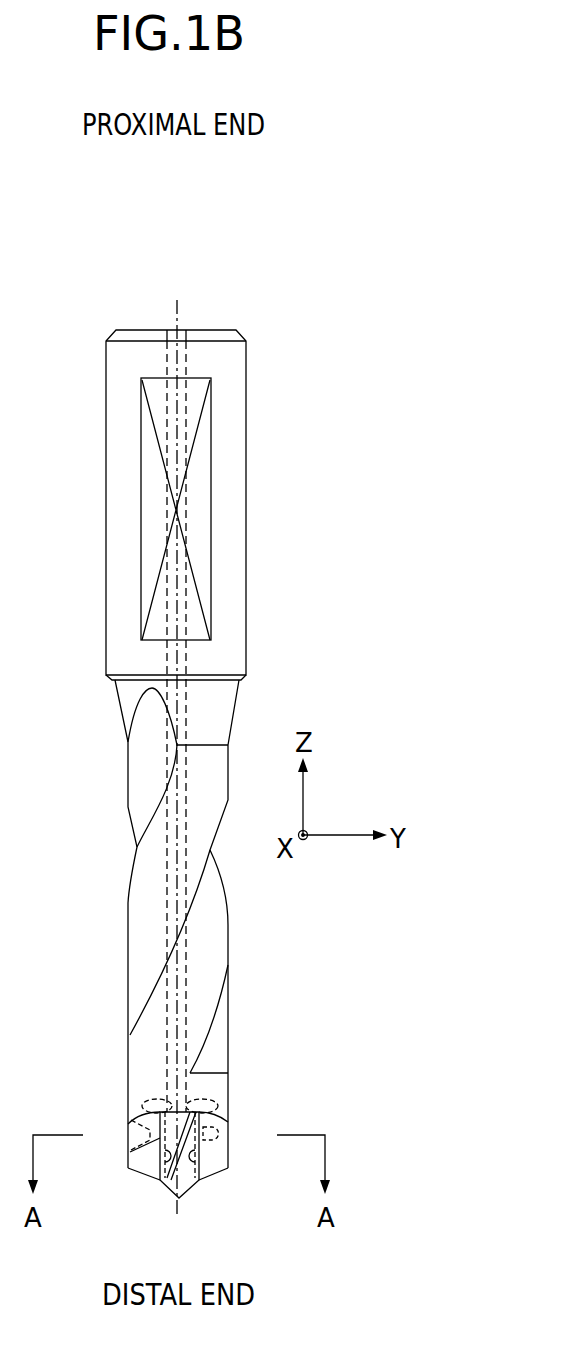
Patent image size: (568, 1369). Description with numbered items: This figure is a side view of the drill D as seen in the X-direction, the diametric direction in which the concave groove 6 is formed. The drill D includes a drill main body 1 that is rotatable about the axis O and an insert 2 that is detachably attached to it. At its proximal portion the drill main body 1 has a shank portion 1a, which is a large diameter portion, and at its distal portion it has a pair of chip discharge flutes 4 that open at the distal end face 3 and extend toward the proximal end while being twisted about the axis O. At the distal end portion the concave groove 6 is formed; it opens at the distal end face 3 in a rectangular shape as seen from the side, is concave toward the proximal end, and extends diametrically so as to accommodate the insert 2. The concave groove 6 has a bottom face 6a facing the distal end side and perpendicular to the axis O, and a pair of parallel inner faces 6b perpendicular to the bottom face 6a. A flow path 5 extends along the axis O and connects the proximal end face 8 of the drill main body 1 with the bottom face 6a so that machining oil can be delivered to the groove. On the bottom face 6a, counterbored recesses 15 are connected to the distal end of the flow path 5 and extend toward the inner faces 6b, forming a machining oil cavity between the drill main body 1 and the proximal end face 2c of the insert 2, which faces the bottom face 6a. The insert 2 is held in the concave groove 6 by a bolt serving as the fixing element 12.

The drill D is at (207, 258).
The drill main body 1 is at (118, 800).
The shank portion 1a is at (122, 475).
The insert 2 is at (186, 1188).
The proximal end face (back face) of the insert 2c is at (226, 1073).
The distal end face 3 is at (138, 1175).
The chip discharge flutes 4 is at (152, 1012).
The flow path 5 is at (168, 707).
The concave groove 6 is at (200, 1176).
The bottom face 6a is at (142, 1113).
The inner faces 6b is at (163, 1168).
The proximal end face 8 is at (203, 330).
The fixing element 12 is at (132, 1135).
The recesses 15 is at (150, 1098).
The axis O is at (176, 358).